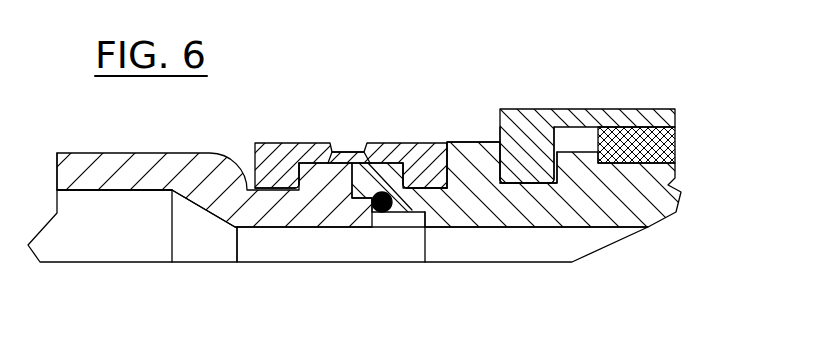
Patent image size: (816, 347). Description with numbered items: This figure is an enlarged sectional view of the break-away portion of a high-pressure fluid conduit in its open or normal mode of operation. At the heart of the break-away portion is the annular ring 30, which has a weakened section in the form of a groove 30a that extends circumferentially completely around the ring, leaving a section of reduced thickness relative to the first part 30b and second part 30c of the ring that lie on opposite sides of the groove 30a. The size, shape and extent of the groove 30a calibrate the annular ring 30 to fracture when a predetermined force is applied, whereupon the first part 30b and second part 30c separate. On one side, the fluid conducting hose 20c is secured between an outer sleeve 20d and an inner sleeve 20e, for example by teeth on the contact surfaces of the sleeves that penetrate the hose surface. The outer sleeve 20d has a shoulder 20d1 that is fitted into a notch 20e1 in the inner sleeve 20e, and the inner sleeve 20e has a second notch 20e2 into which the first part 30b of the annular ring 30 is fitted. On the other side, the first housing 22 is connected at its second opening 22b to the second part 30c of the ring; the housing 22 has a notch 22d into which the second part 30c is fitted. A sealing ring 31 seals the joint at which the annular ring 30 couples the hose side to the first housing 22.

The fluid conducting hose 20c is at (675, 142).
The outer sleeve 20d is at (587, 109).
The shoulder 20d1 is at (525, 118).
The inner sleeve 20e is at (553, 226).
The notch 20e1 is at (539, 185).
The second notch 20e2 is at (448, 142).
The first housing 22 is at (367, 230).
The second opening 22b is at (236, 247).
The notch 22d is at (299, 188).
The annular ring 30 is at (280, 143).
The groove 30a is at (348, 150).
The first part 30b is at (433, 173).
The second part 30c is at (281, 165).
The sealing ring 31 is at (384, 192).